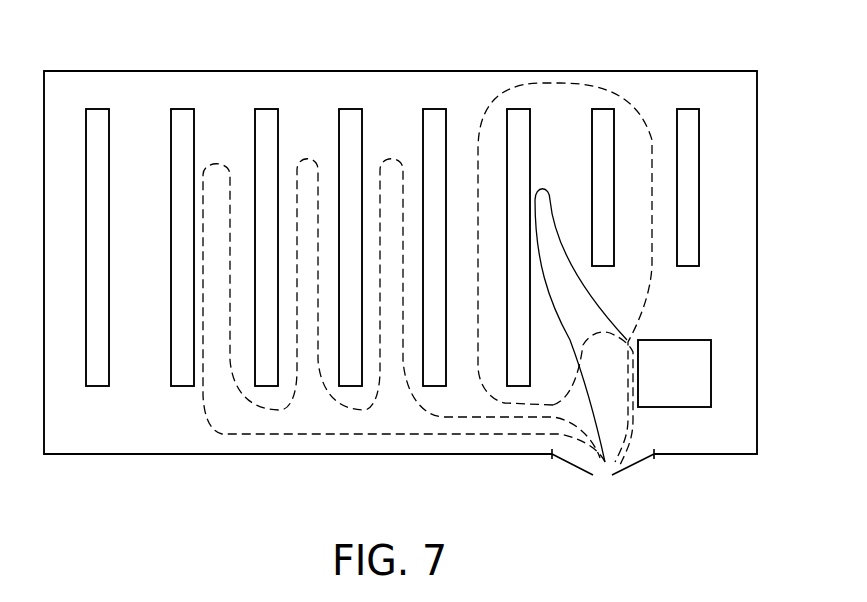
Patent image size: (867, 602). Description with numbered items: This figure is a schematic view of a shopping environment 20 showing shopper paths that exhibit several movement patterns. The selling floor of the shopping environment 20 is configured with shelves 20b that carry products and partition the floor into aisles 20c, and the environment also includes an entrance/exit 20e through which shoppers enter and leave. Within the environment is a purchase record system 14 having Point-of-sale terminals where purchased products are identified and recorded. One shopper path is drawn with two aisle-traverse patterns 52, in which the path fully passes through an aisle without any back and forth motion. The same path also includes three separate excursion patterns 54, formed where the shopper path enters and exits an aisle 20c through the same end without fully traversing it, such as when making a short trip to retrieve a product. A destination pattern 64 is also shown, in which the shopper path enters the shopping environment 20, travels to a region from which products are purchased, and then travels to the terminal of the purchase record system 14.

The shopping environment 20 is at (618, 71).
The shelves 20b is at (98, 108).
The aisles 20c is at (160, 218).
The entrance/exit 20e is at (548, 469).
The aisle-traverse pattern 52 is at (478, 137).
The excursion pattern 54 is at (205, 378).
The destination pattern 64 is at (568, 343).
The purchase record system 14 is at (740, 356).